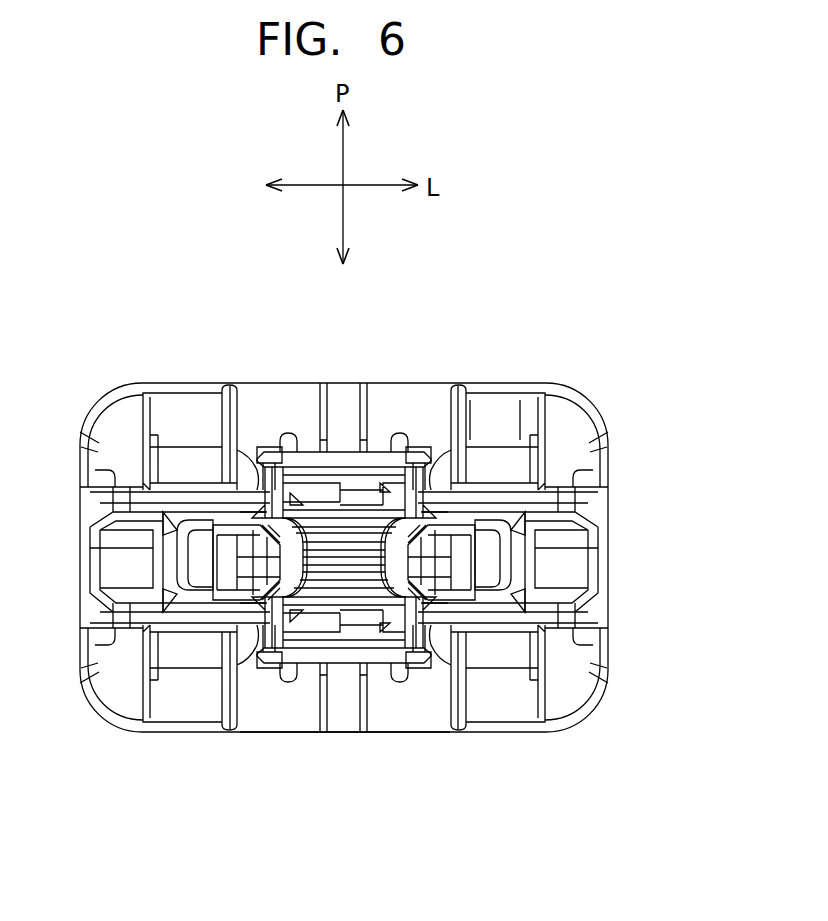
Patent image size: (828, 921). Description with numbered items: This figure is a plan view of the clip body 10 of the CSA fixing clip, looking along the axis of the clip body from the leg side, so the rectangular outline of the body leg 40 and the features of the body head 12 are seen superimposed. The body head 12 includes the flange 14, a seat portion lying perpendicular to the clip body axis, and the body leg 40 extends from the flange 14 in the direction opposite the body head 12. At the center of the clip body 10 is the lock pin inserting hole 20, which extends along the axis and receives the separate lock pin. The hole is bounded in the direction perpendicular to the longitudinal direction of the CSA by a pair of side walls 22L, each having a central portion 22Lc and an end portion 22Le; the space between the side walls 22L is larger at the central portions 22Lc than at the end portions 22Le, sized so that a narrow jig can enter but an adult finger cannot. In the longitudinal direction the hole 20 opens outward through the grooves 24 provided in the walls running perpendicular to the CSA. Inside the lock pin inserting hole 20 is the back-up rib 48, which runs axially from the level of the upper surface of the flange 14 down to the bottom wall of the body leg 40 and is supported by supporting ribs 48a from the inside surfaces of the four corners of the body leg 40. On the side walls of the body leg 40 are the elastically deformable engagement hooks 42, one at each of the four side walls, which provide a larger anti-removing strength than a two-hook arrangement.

The clip body 10 is at (610, 492).
The body head 12 is at (572, 698).
The flange 14 is at (485, 420).
The lock pin inserting hole 20 is at (306, 733).
The side walls 22L is at (385, 460).
The central portion 22Lc is at (277, 458).
The end portion 22Le is at (186, 505).
The grooves 24 is at (115, 563).
The body leg 40 is at (222, 527).
The engagement hooks 42 is at (352, 455).
The back-up rib 48 is at (327, 562).
The supporting ribs 48a is at (258, 462).